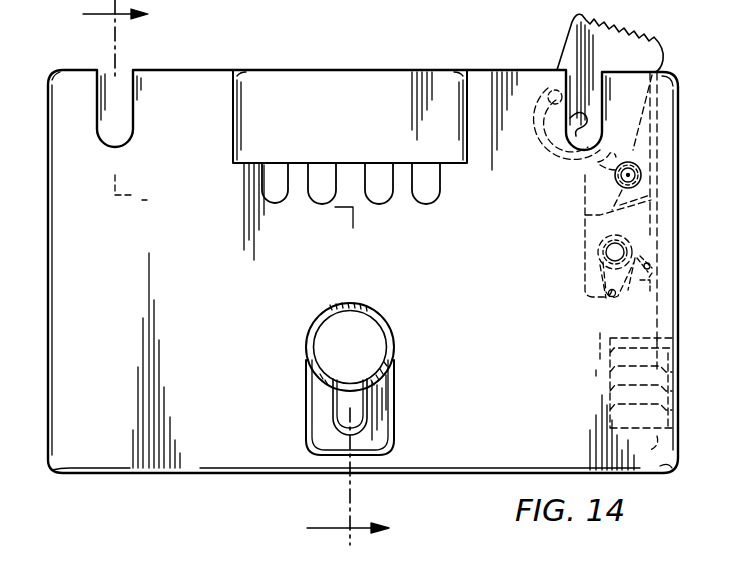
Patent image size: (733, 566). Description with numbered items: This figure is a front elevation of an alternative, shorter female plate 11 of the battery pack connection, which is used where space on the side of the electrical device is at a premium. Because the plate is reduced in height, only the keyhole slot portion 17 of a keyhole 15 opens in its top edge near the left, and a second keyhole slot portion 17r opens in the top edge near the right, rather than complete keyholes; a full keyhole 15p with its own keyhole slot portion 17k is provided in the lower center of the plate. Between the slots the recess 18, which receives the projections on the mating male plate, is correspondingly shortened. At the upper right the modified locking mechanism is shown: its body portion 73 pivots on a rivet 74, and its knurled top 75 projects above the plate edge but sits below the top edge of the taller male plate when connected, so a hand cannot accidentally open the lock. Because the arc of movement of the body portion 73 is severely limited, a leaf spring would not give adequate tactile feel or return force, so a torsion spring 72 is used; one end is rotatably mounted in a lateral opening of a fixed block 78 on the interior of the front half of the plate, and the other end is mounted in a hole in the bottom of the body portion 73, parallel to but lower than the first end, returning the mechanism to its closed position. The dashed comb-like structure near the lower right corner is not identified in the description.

The female plate 11 is at (64, 414).
The keyhole 15 is at (249, 272).
The keyhole 15p is at (400, 342).
The keyhole slot portion 17 is at (118, 112).
The keyhole slot portion 17k is at (366, 412).
The keyhole slot portion 17r is at (576, 108).
The recess 18 is at (354, 90).
The torsion spring 72 is at (586, 242).
The body portion 73 is at (580, 262).
The rivet 74 is at (632, 176).
The knurled top 75 is at (626, 30).
The fixed block 78 is at (652, 274).
The spring comb is at (634, 391).